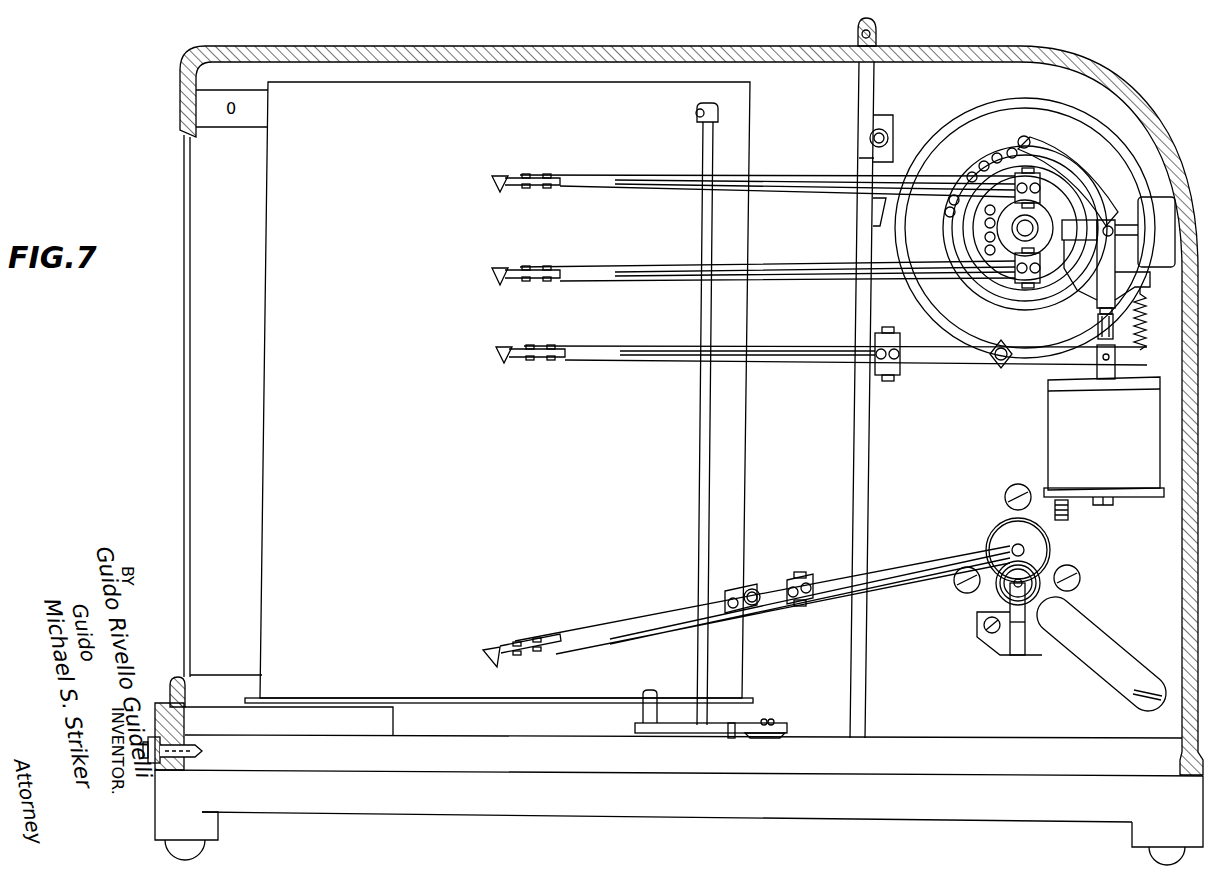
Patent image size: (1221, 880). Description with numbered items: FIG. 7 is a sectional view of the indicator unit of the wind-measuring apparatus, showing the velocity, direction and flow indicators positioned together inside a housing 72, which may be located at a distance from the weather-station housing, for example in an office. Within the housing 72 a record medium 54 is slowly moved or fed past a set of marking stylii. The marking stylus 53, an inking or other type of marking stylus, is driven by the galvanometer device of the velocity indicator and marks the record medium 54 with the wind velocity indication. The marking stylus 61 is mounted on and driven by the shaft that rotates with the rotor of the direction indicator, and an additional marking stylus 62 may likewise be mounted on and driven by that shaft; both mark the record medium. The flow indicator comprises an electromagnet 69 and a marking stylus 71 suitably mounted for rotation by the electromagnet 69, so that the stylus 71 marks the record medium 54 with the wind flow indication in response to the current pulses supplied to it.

The housing 72 is at (1102, 76).
The record medium 54 is at (458, 507).
The additional marking stylus 62 is at (594, 176).
The marking stylus 61 is at (583, 272).
The marking stylus 71 is at (576, 353).
The marking stylus 53 is at (560, 634).
The electromagnet 69 is at (1058, 432).